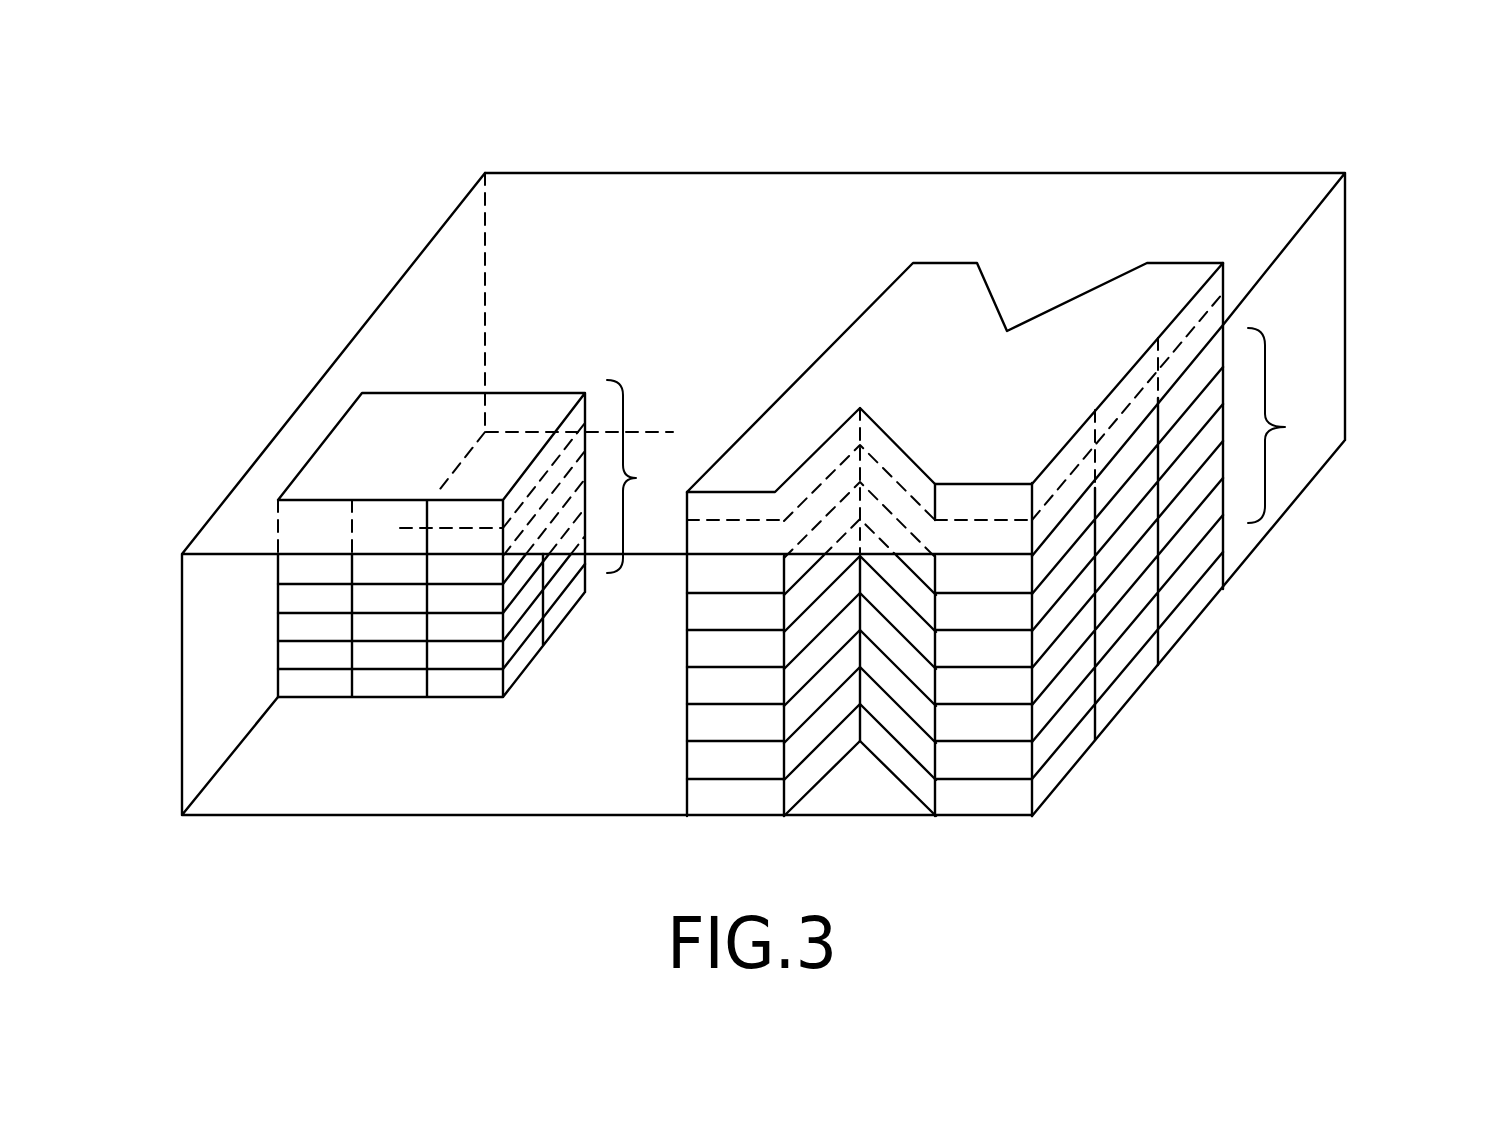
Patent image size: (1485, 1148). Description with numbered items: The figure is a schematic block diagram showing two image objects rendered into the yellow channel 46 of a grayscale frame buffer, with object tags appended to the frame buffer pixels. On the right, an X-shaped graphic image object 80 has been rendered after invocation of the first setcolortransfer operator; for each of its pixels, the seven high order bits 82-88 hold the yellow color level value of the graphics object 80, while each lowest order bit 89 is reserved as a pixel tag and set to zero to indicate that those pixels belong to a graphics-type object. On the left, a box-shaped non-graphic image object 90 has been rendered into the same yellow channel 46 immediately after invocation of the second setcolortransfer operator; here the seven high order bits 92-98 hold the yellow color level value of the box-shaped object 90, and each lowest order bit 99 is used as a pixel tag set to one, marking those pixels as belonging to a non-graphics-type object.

The yellow channel 46 is at (1302, 325).
The X-shaped graphic image object 80 is at (1085, 457).
The seven high order bits 82-88 is at (1290, 417).
The lowest order bit 89 is at (1220, 613).
The box-shaped non-graphic image object 90 is at (521, 569).
The seven high order bits 92-98 is at (657, 467).
The lowest order bit 99 is at (405, 705).